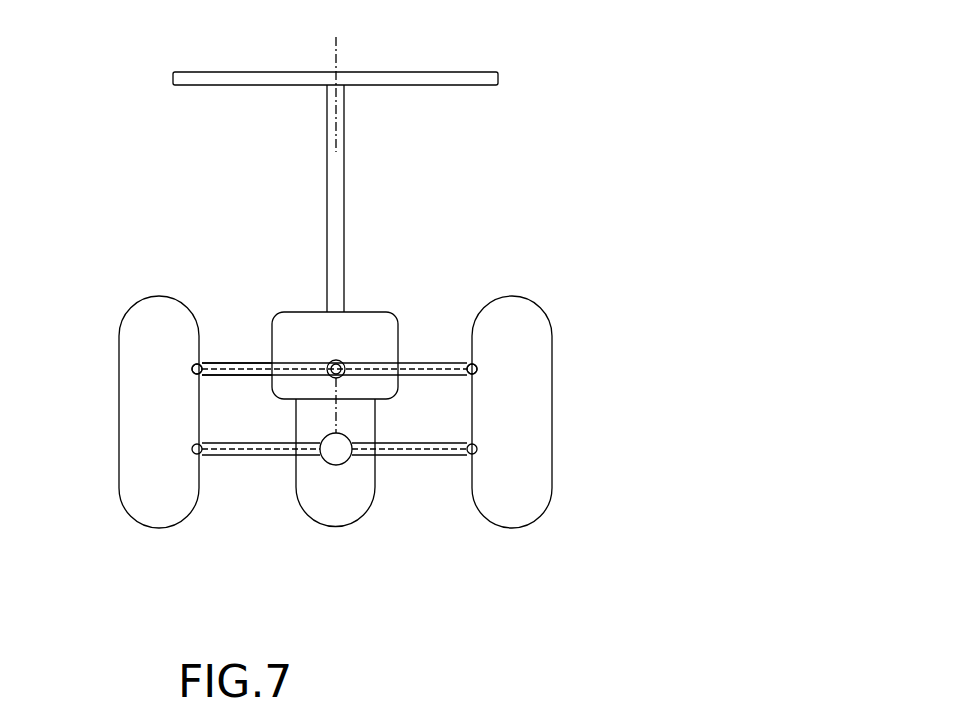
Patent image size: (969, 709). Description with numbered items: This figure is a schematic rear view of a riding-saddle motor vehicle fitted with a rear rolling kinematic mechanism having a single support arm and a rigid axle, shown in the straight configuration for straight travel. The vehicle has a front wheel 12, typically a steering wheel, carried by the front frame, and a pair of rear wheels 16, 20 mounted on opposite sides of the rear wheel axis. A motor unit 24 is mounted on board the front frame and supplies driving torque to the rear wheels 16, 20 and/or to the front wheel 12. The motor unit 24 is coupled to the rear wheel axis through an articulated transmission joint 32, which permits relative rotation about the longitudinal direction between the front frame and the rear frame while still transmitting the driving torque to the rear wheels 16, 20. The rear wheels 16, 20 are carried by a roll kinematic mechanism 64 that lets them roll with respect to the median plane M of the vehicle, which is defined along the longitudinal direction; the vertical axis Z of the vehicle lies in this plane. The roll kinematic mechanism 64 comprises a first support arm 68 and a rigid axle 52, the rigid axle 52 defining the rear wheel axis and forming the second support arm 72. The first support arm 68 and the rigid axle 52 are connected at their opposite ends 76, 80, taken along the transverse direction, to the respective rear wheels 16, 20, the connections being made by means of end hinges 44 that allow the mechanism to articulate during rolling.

The front wheel 12 is at (337, 505).
The rear wheel 16 is at (147, 488).
The rear wheel 20 is at (530, 510).
The motor unit 24 is at (377, 325).
The articulated transmission joint 32 is at (345, 456).
The end hinge 44 is at (190, 370).
The rigid axle 52 is at (255, 455).
The roll kinematic mechanism 64 is at (232, 350).
The first support arm 68 is at (253, 362).
The second support arm 72 is at (322, 518).
The end 76 is at (193, 360).
The end 80 is at (475, 362).
The median plane M is at (259, 79).
The axis Z is at (332, 45).